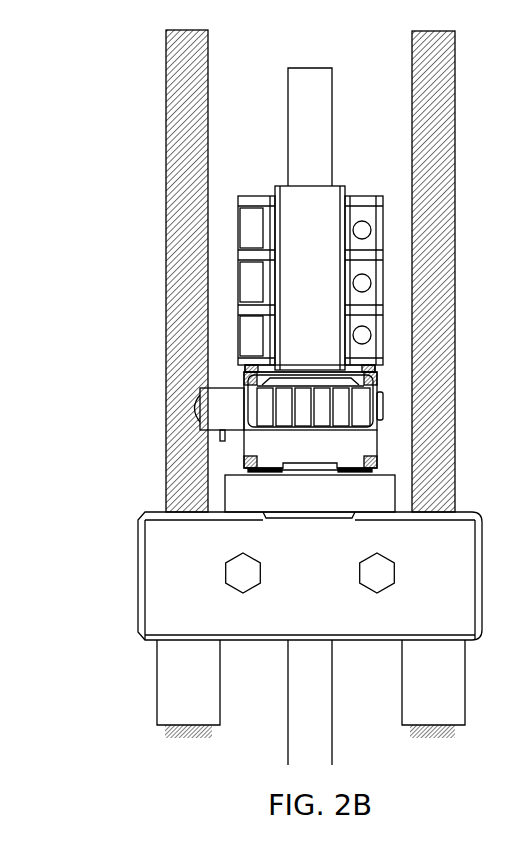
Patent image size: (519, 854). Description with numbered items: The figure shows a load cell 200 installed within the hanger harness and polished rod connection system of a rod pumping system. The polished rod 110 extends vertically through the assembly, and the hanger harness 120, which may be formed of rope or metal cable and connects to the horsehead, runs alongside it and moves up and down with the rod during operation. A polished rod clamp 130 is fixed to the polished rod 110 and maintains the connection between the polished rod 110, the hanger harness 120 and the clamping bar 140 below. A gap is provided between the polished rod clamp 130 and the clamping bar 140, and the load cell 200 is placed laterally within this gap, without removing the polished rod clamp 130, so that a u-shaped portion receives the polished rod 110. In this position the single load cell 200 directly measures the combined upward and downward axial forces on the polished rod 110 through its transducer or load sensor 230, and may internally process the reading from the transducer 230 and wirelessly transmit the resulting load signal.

The polished rod 110 is at (305, 152).
The hanger harness 120 is at (182, 285).
The polished rod clamp 130 is at (305, 232).
The clamping bar 140 is at (150, 581).
The load cell 200 is at (328, 458).
The transducer 230 is at (356, 472).